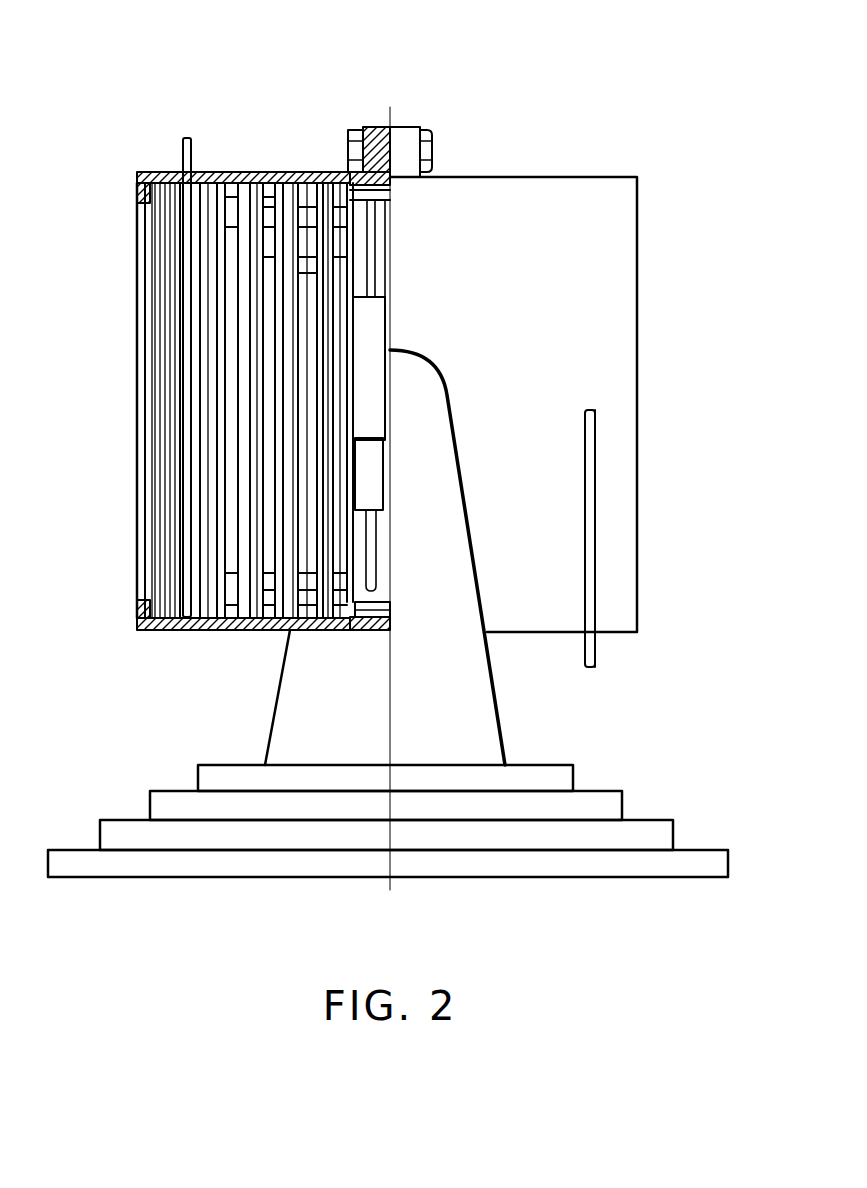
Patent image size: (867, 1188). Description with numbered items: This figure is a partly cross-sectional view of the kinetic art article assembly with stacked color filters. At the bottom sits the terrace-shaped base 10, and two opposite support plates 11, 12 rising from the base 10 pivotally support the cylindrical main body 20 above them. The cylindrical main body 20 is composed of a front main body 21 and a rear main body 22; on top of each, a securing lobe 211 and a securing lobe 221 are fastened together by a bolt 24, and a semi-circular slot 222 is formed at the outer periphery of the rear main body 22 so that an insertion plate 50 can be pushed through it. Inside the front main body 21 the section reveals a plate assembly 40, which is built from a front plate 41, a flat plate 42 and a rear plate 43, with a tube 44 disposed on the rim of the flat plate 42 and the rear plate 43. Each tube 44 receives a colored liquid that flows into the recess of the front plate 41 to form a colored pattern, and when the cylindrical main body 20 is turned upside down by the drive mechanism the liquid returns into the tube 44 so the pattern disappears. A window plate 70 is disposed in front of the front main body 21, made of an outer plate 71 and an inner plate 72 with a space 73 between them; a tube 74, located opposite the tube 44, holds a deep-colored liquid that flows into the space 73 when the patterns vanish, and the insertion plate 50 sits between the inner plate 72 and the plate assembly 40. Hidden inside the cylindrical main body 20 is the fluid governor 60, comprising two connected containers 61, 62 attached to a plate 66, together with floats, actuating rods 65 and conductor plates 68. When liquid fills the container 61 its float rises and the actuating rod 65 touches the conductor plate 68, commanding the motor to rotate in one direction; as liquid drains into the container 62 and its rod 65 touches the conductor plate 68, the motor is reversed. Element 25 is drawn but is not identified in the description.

The terrace-shaped base 10 is at (700, 862).
The support plate 11 is at (470, 720).
The support plate 12 is at (310, 725).
The cylindrical main body 20 is at (395, 97).
The front main body 21 is at (162, 172).
The securing lobe 211 is at (372, 128).
The securing lobe 221 is at (407, 135).
The rear main body 22 is at (598, 200).
The semi-circular slot 222 is at (597, 537).
The bolt 24 is at (434, 145).
The flange 25 is at (136, 192).
The plate assembly 40 is at (254, 106).
The front plate 41 is at (238, 180).
The flat plate 42 is at (255, 182).
The rear plate 43 is at (268, 183).
The tube 44 is at (340, 174).
The insertion plate 50 is at (187, 136).
The fluid governor 60 is at (440, 297).
The container 61 is at (372, 340).
The container 62 is at (372, 483).
The actuating rod 65 is at (375, 263).
The plate 66 is at (350, 235).
The conductor plate 68 is at (393, 618).
The window plate 70 is at (115, 366).
The outer plate 71 is at (147, 420).
The inner plate 72 is at (168, 462).
The space 73 is at (158, 500).
The tube 74 is at (262, 622).